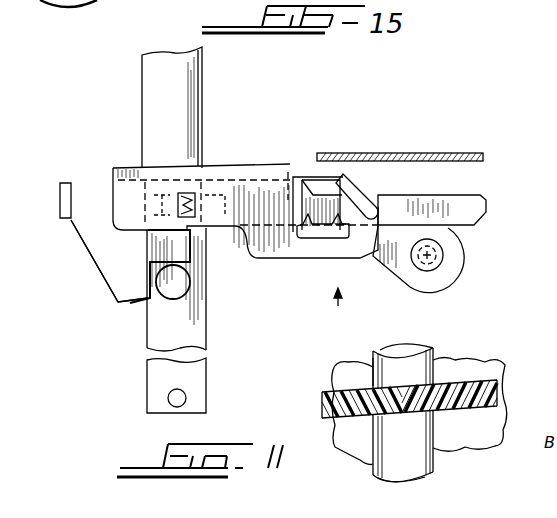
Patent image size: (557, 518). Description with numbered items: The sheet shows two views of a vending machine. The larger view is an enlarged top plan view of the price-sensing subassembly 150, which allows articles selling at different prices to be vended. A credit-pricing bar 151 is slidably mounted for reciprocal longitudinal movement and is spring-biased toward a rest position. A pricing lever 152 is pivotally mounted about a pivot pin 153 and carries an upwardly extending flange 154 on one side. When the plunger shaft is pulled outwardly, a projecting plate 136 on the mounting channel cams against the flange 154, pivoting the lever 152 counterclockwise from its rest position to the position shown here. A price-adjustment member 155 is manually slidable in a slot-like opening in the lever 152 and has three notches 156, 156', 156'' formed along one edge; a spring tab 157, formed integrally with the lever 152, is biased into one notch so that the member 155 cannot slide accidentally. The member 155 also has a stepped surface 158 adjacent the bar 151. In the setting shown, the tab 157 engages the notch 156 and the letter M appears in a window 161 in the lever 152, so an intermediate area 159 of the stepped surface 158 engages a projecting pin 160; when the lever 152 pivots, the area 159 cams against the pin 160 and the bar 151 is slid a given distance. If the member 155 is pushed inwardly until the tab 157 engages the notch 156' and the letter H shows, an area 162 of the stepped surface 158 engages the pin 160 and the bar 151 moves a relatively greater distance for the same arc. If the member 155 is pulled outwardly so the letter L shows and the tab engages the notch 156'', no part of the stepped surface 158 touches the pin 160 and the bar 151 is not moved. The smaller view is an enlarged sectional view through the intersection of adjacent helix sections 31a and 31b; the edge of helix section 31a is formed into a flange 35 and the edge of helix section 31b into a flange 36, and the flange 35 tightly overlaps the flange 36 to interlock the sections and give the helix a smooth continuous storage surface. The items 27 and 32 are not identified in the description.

In FIG. 15, the credit-pricing bar 151 is at (190, 97).
In FIG. 15, the pricing lever 152 is at (307, 253).
In FIG. 15, the pivot pin 153 is at (432, 255).
In FIG. 15, the upwardly extending flange 154 is at (238, 176).
In FIG. 15, the price-adjustment member 155 is at (305, 178).
In FIG. 15, the notch 156 is at (355, 204).
In FIG. 15, the notch 156' is at (330, 176).
In FIG. 15, the notch 156'' is at (403, 197).
In FIG. 15, the spring tab 157 is at (303, 238).
In FIG. 15, the stepped surface 158 is at (123, 252).
In FIG. 15, the intermediate area 159 is at (180, 250).
In FIG. 15, the projecting pin 160 is at (177, 288).
In FIG. 15, the window 161 is at (181, 188).
In FIG. 15, the area of stepped surface 162 is at (123, 292).
In FIG. 15, the price-sensing subassembly 150 is at (338, 306).
In FIG. 15, the projecting plate 136 is at (408, 157).
In FIG. 11, the wall 27 is at (450, 364).
In FIG. 11, the helix section 31a is at (324, 399).
In FIG. 11, the helix section 31b is at (490, 385).
In FIG. 11, the pipe 32 is at (385, 445).
In FIG. 11, the flange 35 is at (373, 360).
In FIG. 11, the flange 36 is at (395, 415).